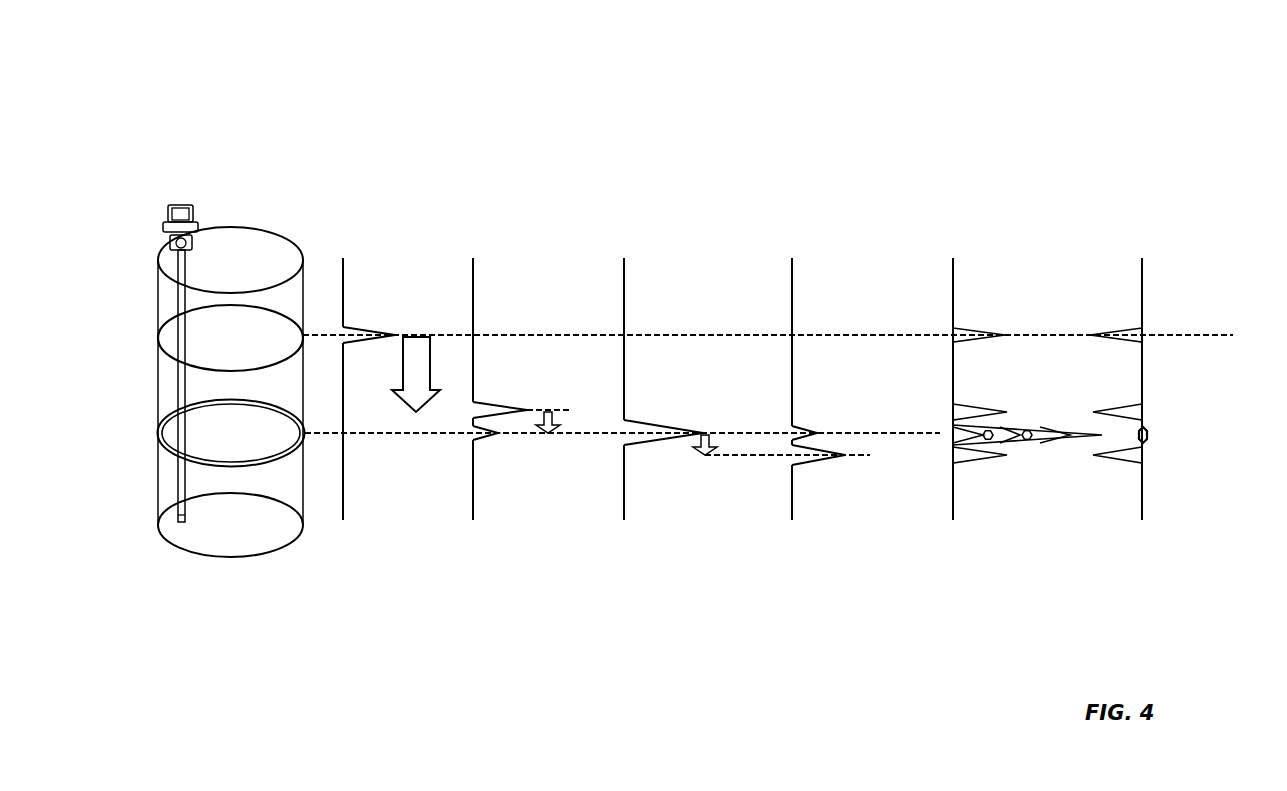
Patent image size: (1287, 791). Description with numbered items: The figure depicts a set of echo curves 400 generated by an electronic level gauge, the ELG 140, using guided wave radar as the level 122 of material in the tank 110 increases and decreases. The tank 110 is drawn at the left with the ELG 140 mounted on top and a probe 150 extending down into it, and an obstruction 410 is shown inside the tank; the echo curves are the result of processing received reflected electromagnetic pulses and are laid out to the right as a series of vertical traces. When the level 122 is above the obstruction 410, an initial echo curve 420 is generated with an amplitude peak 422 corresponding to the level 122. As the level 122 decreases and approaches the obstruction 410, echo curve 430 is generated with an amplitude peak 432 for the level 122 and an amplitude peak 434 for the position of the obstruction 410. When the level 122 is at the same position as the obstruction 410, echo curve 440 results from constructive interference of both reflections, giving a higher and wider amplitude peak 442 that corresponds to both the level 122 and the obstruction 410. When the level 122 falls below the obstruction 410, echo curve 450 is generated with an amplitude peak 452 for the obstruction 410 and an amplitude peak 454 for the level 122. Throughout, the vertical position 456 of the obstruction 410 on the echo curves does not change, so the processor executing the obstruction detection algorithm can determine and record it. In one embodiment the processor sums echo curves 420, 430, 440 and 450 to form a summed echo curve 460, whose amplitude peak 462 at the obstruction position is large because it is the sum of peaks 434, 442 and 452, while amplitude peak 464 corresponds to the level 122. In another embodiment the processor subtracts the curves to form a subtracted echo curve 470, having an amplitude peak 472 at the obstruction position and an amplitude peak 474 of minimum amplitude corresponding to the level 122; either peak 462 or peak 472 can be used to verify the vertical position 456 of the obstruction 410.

The echo curves 400 is at (713, 93).
The tank 110 is at (287, 238).
The level 122 is at (230, 307).
The ELG 140 is at (190, 203).
The rod 150 is at (185, 522).
The obstruction 410 is at (245, 458).
The initial echo curve 420 is at (343, 258).
The amplitude peak 422 is at (384, 332).
The echo curve 430 is at (473, 258).
The amplitude peak 432 is at (520, 404).
The amplitude peak 434 is at (496, 436).
The echo curve 440 is at (624, 258).
The amplitude peak 442 is at (696, 428).
The echo curve 450 is at (792, 258).
The amplitude peak 452 is at (814, 430).
The amplitude peak 454 is at (830, 458).
The vertical position 456 is at (383, 433).
The summed echo curve 460 is at (953, 258).
The amplitude peak 462 is at (1078, 440).
The amplitude peak 464 is at (1005, 333).
The subtracted echo curve 470 is at (1142, 258).
The amplitude peak 472 is at (1148, 440).
The amplitude peak 474 is at (1118, 330).